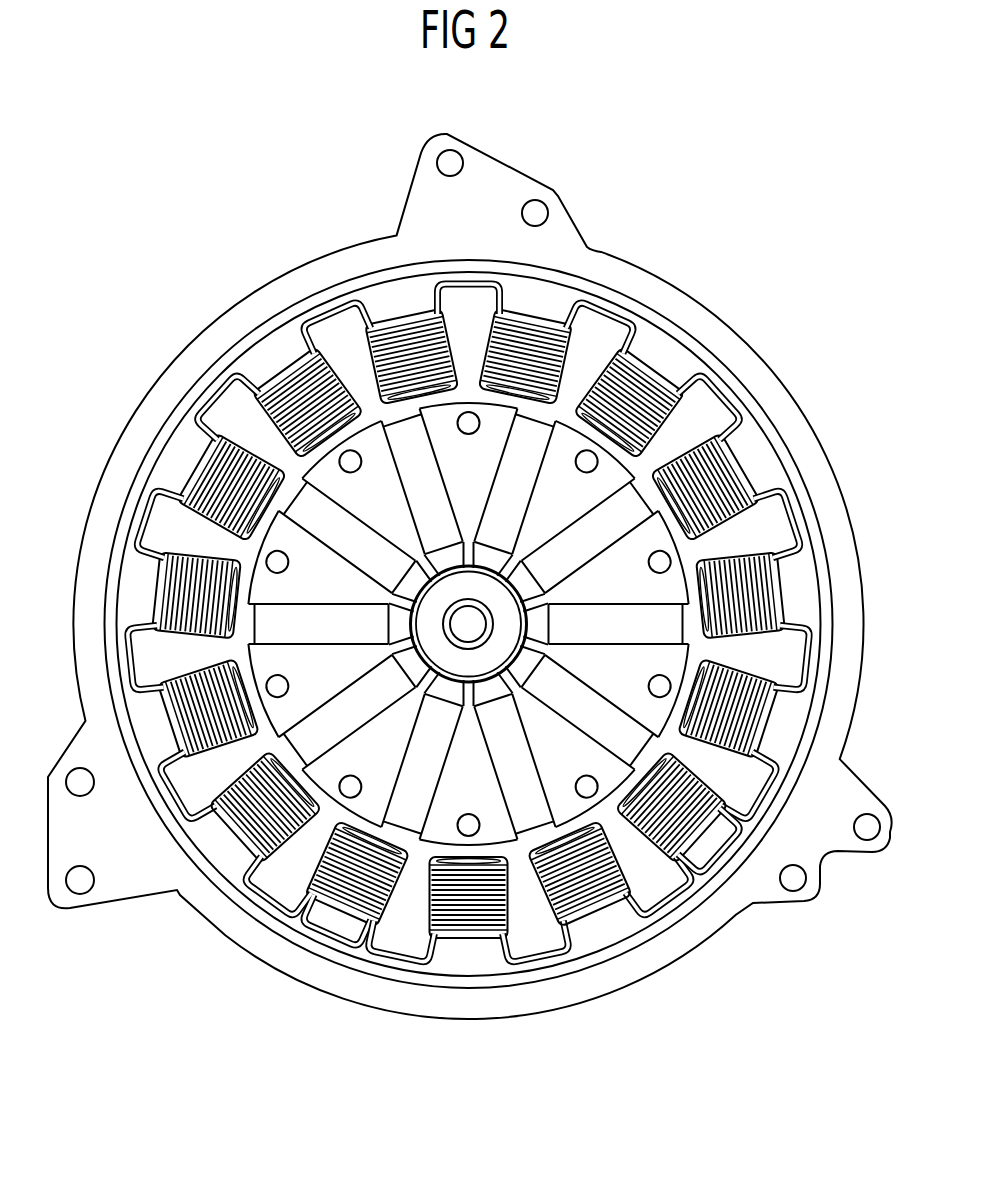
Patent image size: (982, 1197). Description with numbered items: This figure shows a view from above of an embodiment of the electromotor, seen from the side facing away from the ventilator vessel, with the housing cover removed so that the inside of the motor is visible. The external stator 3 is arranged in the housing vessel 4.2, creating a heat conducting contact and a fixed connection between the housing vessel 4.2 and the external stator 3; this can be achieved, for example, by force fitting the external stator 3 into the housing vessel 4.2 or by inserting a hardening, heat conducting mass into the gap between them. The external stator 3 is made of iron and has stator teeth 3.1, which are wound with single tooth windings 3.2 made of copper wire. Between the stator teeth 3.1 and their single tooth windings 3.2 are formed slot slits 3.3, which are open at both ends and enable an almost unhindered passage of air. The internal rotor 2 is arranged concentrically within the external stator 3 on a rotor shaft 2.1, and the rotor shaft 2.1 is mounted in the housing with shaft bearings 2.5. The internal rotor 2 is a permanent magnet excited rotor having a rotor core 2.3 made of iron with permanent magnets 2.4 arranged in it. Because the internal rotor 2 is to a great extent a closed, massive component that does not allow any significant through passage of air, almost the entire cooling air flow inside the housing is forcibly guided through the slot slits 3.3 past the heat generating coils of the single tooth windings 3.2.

The internal rotor 2 is at (566, 706).
The rotor shaft 2.1 is at (463, 622).
The rotor core 2.3 is at (605, 478).
The permanent magnets 2.4 is at (623, 513).
The shaft bearings 2.5 is at (477, 590).
The external stator 3 is at (420, 656).
The stator teeth 3.1 is at (168, 556).
The single tooth windings 3.2 is at (347, 863).
The slot slits 3.3 is at (623, 900).
The housing vessel 4.2 is at (683, 312).